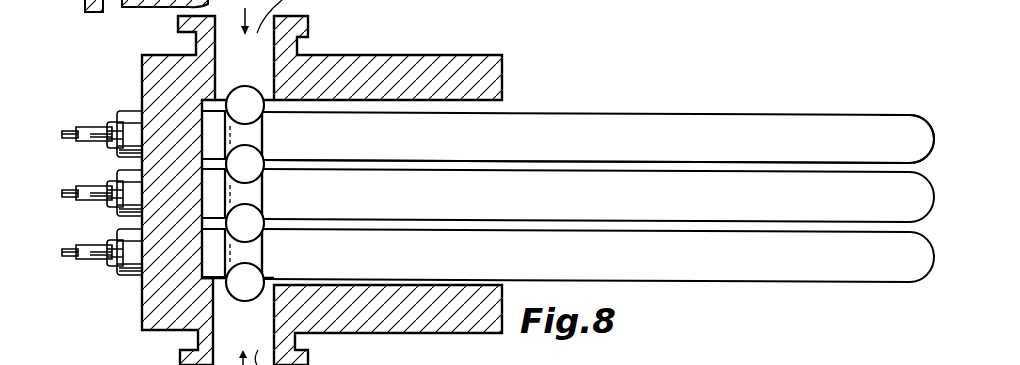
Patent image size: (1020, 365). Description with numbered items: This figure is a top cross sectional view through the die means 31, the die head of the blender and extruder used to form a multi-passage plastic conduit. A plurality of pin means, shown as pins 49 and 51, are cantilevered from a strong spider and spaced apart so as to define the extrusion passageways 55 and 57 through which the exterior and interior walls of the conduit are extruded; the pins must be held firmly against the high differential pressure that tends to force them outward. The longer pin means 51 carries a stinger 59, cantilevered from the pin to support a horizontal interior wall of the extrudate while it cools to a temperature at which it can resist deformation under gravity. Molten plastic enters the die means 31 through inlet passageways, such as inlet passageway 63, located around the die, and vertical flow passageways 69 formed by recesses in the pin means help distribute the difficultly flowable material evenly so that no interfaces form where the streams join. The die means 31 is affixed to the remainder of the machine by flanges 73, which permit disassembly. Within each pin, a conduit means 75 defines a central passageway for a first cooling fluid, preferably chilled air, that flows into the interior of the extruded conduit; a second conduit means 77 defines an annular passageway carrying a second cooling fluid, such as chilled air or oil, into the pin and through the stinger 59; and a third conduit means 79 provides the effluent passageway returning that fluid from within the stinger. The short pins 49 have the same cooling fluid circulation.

The die means 31 is at (592, 35).
The pins 49 is at (505, 253).
The pins 51 is at (505, 197).
The extrusion passageways 55 is at (505, 108).
The extrusion passageways 57 is at (505, 160).
The stinger 59 is at (823, 124).
The inlet passageway 63 is at (65, 0).
The vertical flow passageways 69 is at (232, 96).
The flanges 73 is at (308, 26).
The conduit means 75 is at (74, 254).
The second conduit means 77 is at (88, 247).
The third conduit means 79 is at (95, 262).